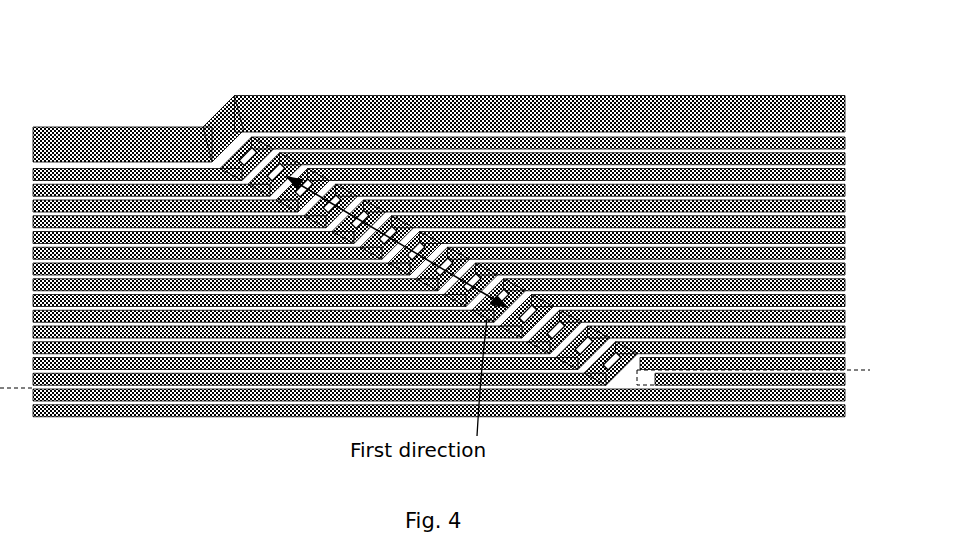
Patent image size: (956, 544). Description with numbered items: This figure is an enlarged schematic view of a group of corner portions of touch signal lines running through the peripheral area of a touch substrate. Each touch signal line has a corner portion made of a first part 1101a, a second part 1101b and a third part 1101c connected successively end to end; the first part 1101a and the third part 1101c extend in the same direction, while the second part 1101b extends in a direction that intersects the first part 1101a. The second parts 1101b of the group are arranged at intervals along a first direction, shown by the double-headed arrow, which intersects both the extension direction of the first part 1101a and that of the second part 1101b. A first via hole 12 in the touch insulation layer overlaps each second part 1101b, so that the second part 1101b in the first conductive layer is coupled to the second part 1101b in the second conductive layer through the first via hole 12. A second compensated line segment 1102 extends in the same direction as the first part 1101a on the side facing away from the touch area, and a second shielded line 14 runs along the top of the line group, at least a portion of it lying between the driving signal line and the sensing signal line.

The second shielded line 14 is at (720, 120).
The first part 1101a is at (165, 172).
The second part 1101b is at (236, 158).
The third part 1101c is at (401, 137).
The first via hole 12 is at (554, 340).
The second compensated line segment 1102 is at (712, 390).